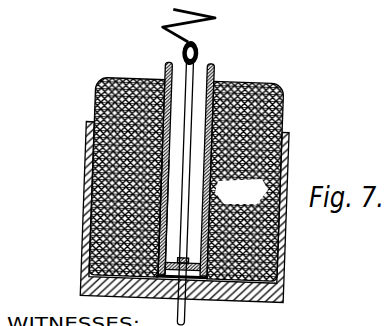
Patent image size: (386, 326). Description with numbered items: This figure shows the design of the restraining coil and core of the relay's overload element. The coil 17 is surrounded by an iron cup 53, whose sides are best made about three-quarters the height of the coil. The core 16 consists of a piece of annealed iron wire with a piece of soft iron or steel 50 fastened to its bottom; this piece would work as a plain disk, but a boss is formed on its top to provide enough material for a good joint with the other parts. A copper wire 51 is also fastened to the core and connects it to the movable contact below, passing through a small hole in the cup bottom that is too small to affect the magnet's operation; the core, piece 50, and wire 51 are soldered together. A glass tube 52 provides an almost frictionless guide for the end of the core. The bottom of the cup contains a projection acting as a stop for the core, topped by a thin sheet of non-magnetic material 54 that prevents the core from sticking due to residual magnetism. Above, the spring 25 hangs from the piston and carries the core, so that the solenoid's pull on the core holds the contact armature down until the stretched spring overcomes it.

The core 16 is at (190, 71).
The coil 17 is at (200, 174).
The spring 25 is at (216, 19).
The piece of soft iron or steel 50 is at (167, 262).
The copper wire 51 is at (179, 308).
The glass tube 52 is at (215, 72).
The iron cup 53 is at (290, 139).
The thin sheet of non-magnetic material 54 is at (192, 274).